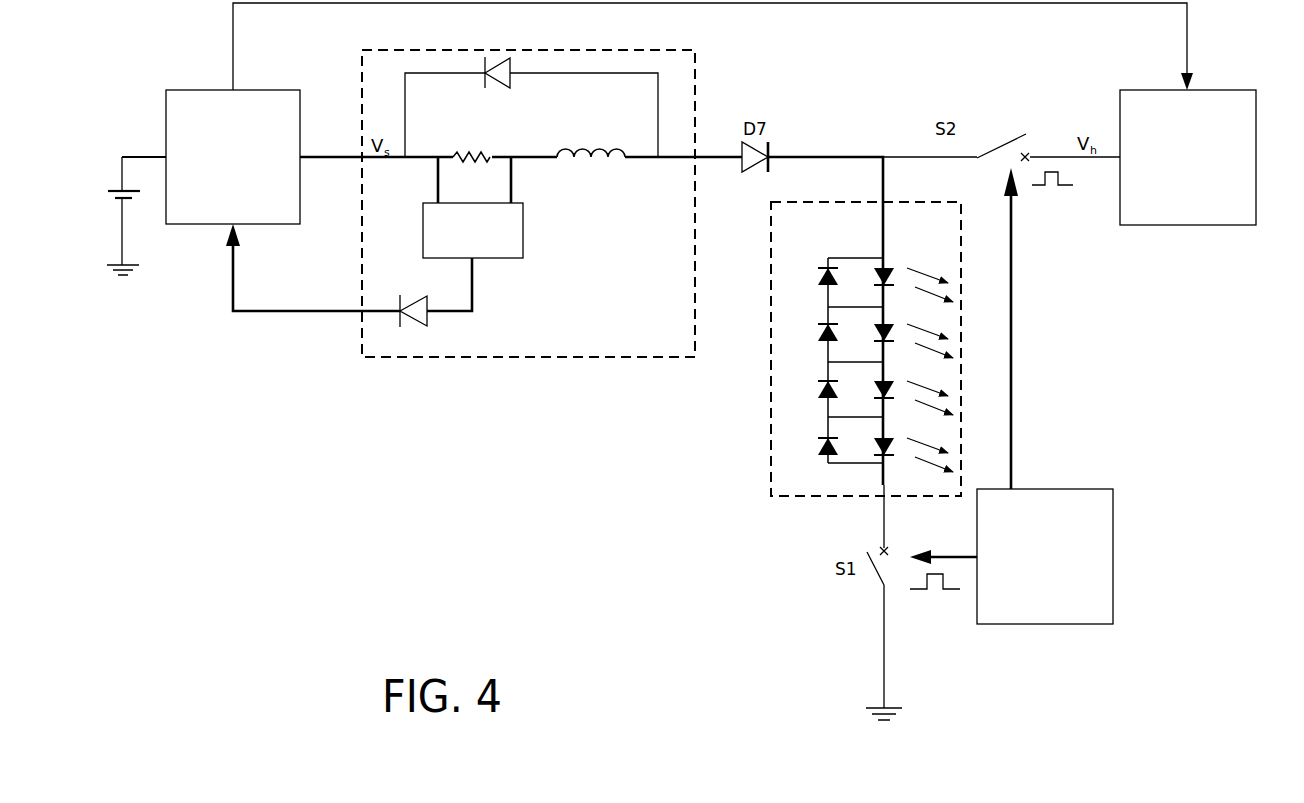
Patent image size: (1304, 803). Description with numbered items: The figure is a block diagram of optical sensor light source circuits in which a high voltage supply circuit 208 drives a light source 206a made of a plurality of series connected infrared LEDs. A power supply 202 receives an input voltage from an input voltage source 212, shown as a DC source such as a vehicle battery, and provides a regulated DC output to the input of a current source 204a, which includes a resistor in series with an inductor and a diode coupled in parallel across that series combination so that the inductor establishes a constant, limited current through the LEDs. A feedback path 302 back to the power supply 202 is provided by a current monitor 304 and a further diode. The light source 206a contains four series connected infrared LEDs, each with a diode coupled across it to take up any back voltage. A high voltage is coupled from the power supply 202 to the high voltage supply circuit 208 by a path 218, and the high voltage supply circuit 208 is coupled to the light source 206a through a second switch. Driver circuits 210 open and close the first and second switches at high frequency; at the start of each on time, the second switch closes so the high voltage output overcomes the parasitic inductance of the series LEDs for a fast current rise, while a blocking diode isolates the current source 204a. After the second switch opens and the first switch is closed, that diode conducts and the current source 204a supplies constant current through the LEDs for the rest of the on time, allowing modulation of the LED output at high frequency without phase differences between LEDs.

The power supply 202 is at (186, 90).
The input voltage source 212 is at (108, 190).
The path 218 is at (850, 3).
The current source 204a is at (505, 203).
The current monitor 304 is at (525, 222).
The feedback path 302 is at (263, 311).
The high voltage supply circuit 208 is at (1187, 225).
The light source 206a is at (771, 428).
The driver circuits 210 is at (1045, 624).